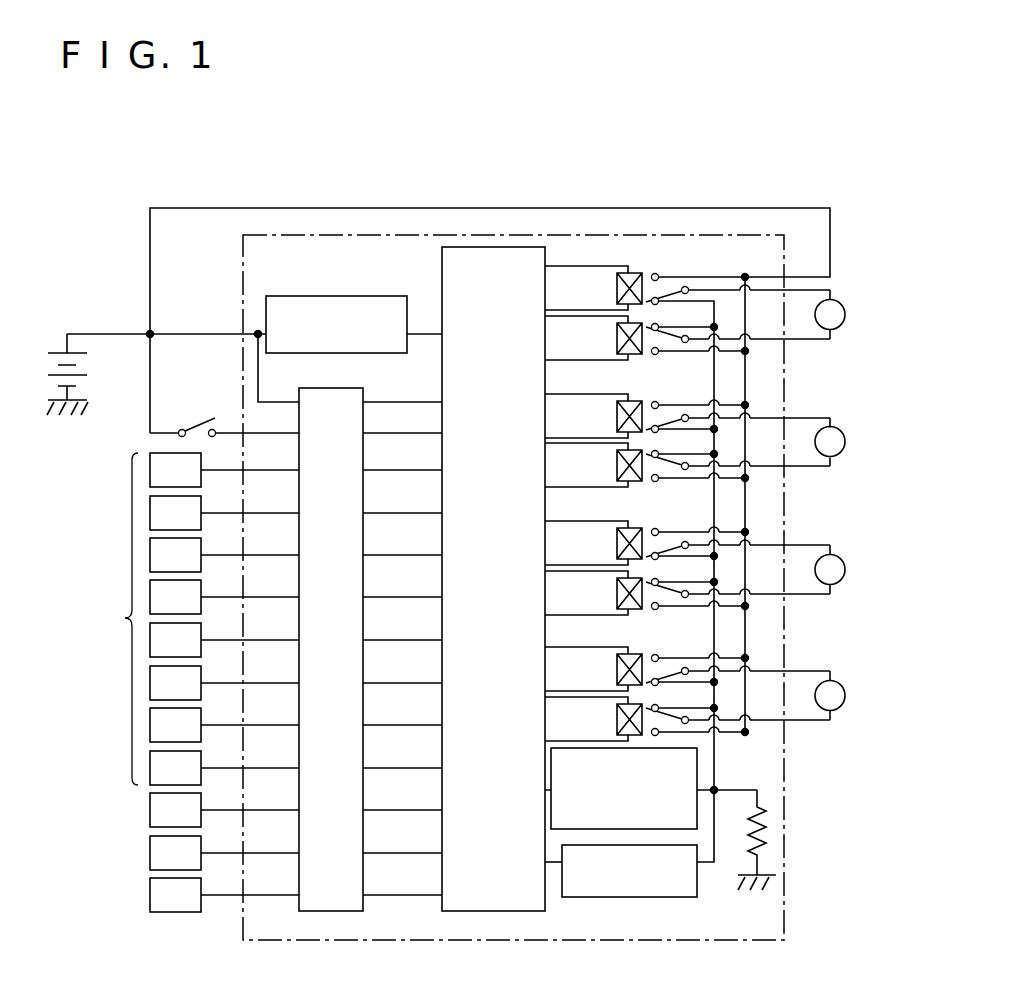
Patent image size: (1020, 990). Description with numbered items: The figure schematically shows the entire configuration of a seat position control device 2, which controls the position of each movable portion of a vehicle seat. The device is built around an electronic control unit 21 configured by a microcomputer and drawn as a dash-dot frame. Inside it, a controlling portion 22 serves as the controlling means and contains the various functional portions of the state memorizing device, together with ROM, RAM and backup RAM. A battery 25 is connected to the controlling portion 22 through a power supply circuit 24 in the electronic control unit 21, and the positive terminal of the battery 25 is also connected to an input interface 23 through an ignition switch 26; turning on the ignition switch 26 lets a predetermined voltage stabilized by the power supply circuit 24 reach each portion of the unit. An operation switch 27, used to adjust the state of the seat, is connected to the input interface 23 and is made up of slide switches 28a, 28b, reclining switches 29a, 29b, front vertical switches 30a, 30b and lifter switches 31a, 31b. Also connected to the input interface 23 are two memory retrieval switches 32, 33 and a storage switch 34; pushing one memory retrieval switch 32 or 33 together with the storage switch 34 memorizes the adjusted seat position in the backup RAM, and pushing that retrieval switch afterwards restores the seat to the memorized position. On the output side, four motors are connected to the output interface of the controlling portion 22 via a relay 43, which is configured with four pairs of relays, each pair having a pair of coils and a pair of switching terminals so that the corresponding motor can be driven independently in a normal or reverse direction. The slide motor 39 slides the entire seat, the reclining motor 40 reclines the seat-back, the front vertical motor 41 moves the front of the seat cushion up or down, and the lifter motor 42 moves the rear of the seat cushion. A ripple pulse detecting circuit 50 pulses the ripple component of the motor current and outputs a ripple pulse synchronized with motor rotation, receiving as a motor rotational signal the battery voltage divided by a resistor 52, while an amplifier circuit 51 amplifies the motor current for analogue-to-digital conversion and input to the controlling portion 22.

The seat position control device 2 is at (122, 250).
The electronic control unit 21 is at (397, 235).
The controlling portion 22 is at (442, 268).
The input interface 23 is at (338, 388).
The power supply circuit 24 is at (318, 296).
The battery 25 is at (83, 357).
The ignition switch 26 is at (190, 422).
The operation switch 27 is at (193, 619).
The slide switch 28a is at (224, 470).
The slide switch 28b is at (224, 513).
The reclining switch 29a is at (224, 555).
The reclining switch 29b is at (224, 597).
The front vertical switch 30a is at (224, 640).
The front vertical switch 30b is at (224, 683).
The lifter switch 31a is at (224, 725).
The lifter switch 31b is at (224, 768).
The memory retrieval switch 32 is at (224, 810).
The memory retrieval switch 33 is at (224, 853).
The storage switch 34 is at (224, 895).
The slide motor 39 is at (846, 313).
The reclining motor 40 is at (846, 440).
The front vertical motor 41 is at (846, 568).
The lifter motor 42 is at (846, 694).
The relay 43 is at (643, 262).
The ripple pulse detecting circuit 50 is at (698, 765).
The amplifier circuit 51 is at (655, 897).
The resistor 52 is at (763, 835).